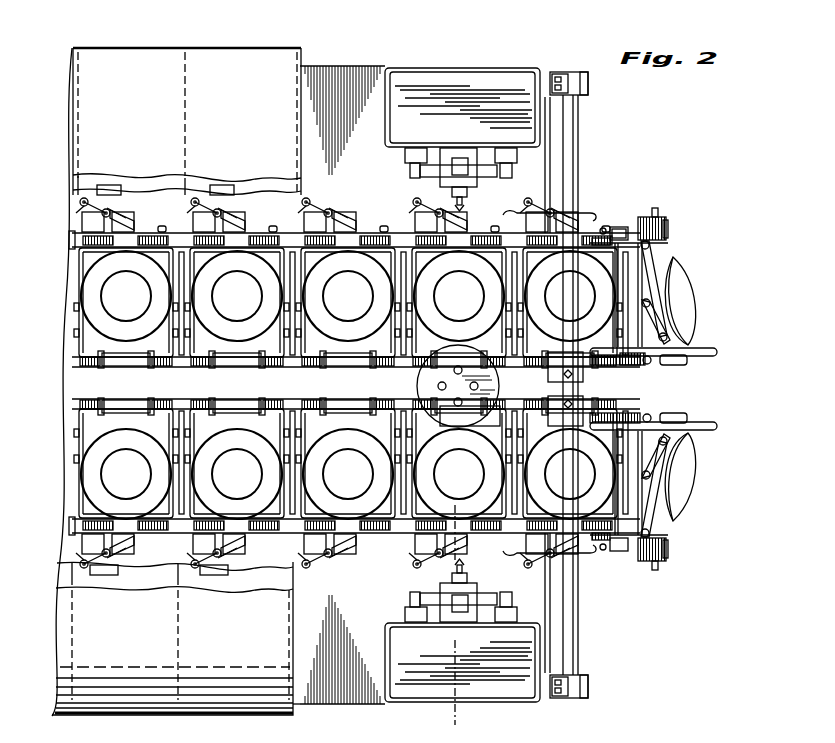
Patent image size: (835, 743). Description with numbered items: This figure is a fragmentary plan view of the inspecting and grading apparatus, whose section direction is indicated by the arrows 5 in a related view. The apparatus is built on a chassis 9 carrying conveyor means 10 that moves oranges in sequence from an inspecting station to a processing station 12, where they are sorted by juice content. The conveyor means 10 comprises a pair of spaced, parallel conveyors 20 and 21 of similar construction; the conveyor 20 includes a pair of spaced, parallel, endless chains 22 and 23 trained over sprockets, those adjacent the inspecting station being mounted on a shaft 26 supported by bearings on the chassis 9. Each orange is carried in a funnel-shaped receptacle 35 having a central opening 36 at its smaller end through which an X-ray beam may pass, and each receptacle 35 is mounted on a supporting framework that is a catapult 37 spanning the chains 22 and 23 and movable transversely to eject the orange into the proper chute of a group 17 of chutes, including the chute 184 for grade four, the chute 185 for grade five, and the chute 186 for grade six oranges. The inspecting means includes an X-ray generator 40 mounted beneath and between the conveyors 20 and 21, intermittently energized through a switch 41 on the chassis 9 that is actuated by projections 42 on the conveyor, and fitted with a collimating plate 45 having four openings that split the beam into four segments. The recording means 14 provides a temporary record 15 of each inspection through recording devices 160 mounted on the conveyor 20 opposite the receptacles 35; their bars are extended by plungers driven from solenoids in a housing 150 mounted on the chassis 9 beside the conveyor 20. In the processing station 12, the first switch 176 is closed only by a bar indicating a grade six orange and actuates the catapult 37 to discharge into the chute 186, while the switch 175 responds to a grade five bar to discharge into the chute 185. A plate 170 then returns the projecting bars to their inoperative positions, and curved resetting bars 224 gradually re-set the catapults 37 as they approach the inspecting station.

The section line 5 is at (437, 510).
The chassis 9 is at (322, 706).
The conveyor means 10 is at (72, 342).
The processing station 12 is at (155, 130).
The recording means 14 is at (487, 78).
The temporary record 15 is at (78, 215).
The group of chutes 17 is at (220, 47).
The conveyor 20 is at (672, 243).
The conveyor 21 is at (698, 462).
The endless chain 22 is at (646, 218).
The endless chain 23 is at (622, 366).
The shaft 26 is at (578, 621).
The receptacle 35 is at (118, 280).
The central opening 36 is at (141, 280).
The catapult 37 is at (694, 293).
The X-ray generator 40 is at (413, 385).
The switch 41 is at (636, 212).
The projection 42 is at (166, 228).
The collimating plate 45 is at (490, 392).
The housing 150 is at (430, 75).
The recording device 160 is at (132, 215).
The plate 170 is at (590, 212).
The switch 175 is at (118, 188).
The switch 176 is at (228, 190).
The chute 184 is at (76, 50).
The chute 185 is at (128, 58).
The chute 186 is at (278, 62).
The resetting bar 224 is at (700, 348).